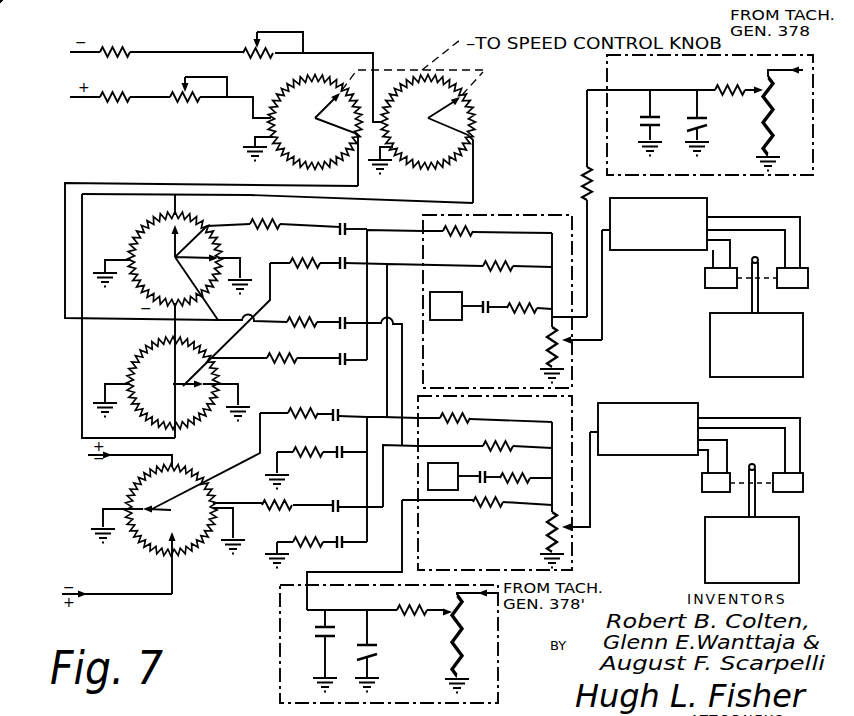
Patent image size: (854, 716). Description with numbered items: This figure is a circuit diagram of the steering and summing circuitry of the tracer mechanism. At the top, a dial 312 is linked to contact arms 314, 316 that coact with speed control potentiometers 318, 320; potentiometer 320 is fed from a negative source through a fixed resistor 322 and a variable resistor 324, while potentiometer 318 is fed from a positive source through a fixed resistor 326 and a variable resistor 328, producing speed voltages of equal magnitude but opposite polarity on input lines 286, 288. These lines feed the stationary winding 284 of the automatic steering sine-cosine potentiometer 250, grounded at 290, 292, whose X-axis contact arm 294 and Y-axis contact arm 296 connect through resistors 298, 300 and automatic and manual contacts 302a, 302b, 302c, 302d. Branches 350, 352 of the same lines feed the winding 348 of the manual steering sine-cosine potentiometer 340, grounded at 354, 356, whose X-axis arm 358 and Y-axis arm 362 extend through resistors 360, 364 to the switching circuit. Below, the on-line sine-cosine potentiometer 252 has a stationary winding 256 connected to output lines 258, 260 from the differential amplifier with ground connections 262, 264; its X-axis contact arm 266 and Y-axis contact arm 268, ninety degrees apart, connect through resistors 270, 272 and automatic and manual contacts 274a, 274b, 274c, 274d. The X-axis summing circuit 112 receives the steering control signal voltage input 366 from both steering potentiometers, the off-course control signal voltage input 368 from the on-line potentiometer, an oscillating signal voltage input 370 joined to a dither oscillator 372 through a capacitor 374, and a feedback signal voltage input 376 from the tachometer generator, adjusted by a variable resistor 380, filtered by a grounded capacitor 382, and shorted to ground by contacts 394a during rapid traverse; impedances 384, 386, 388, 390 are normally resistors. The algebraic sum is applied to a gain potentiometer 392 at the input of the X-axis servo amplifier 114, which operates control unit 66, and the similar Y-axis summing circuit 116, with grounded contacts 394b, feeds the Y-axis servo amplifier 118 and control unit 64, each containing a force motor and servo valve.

The control unit 64 is at (705, 343).
The control unit 66 is at (700, 531).
The X-axis summing circuit 112 is at (530, 206).
The X-axis servo amplifier 114 is at (668, 253).
The Y-axis summing circuit 116 is at (582, 412).
The Y-axis servo amplifier 118 is at (667, 413).
The automatic steering sine-cosine potentiometer 250 is at (203, 216).
The on-line sine-cosine potentiometer 252 is at (200, 540).
The stationary winding 256 is at (167, 550).
The output line 258 is at (130, 457).
The output line 260 is at (133, 597).
The ground connection 262 is at (97, 540).
The ground connection 264 is at (236, 554).
The X-axis contact arm 266 is at (135, 527).
The Y-axis contact arm 268 is at (180, 563).
The resistor 270 is at (293, 409).
The resistor 272 is at (266, 502).
The automatic X-axis contact 274a is at (337, 412).
The manual X-axis contact 274b is at (340, 449).
The automatic Y-axis contact 274c is at (338, 503).
The manual Y-axis contact 274d is at (340, 538).
The stationary winding 284 is at (173, 216).
The input line 286 is at (430, 202).
The input line 288 is at (72, 318).
The ground connection 290 is at (105, 272).
The ground connection 292 is at (243, 279).
The X-axis contact arm 294 is at (125, 219).
The Y-axis contact arm 296 is at (233, 243).
The resistor 298 is at (272, 222).
The resistor 300 is at (303, 320).
The automatic X-axis contact 302a is at (350, 228).
The manual X-axis contact 302b is at (344, 260).
The automatic Y-axis contact 302c is at (350, 320).
The manual Y-axis contact 302d is at (346, 356).
The dial 312 is at (710, 107).
The contact arm 314 is at (241, 93).
The contact arm 316 is at (241, 101).
The speed control potentiometer 318 is at (293, 79).
The speed control potentiometer 320 is at (480, 128).
The fixed resistor 322 is at (108, 49).
The variable resistor 324 is at (305, 33).
The fixed resistor 326 is at (115, 100).
The variable resistor 328 is at (187, 77).
The manual steering sine-cosine potentiometer 340 is at (132, 352).
The winding 348 is at (210, 336).
The branch 350 is at (172, 336).
The branch 352 is at (90, 439).
The ground connection 354 is at (105, 402).
The ground connection 356 is at (236, 424).
The X-axis contact arm 358 is at (187, 346).
The resistor 360 is at (300, 267).
The Y-axis contact arm 362 is at (195, 412).
The resistor 364 is at (287, 355).
The X-axis steering control signal voltage input 366 is at (370, 235).
The X-axis off-course control signal voltage input 368 is at (389, 285).
The oscillating signal voltage input 370 is at (522, 306).
The dither oscillator 372 is at (455, 284).
The capacitor 374 is at (486, 313).
The feedback signal voltage input 376 is at (586, 120).
The variable resistor 380 is at (762, 95).
The grounded capacitor 382 is at (647, 116).
The impedance 384 is at (457, 233).
The impedance 386 is at (498, 264).
The impedance 388 is at (548, 341).
The impedance 390 is at (583, 183).
The gain potentiometer 392 is at (546, 371).
The grounded X-axis contacts 394a is at (692, 132).
The grounded Y-axis contacts 394b is at (374, 656).